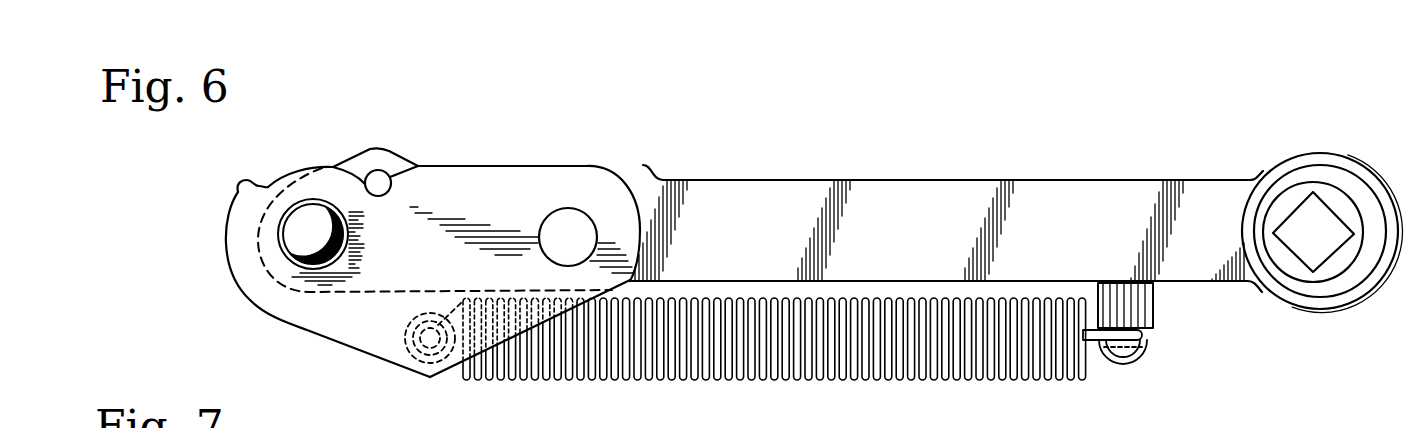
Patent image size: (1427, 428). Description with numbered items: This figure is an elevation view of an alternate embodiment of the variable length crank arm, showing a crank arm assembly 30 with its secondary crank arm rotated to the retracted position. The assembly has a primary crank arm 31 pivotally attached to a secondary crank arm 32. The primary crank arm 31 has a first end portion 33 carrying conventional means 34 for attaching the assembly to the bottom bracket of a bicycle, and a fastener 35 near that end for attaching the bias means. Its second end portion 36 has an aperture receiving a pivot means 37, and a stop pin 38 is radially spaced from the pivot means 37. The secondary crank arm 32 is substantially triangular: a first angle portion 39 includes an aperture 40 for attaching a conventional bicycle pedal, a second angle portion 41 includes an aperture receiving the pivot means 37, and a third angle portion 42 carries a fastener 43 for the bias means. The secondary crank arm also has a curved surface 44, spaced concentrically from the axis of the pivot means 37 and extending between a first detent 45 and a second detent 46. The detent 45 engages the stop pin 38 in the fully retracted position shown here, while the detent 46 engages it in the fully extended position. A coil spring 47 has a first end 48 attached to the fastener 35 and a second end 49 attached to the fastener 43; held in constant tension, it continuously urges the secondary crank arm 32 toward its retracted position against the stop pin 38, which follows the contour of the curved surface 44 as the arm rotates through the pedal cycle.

The crank arm assembly 30 is at (893, 140).
The primary crank arm 31 is at (1055, 188).
The secondary crank arm 32 is at (457, 182).
The first end portion 33 is at (1367, 175).
The conventional means 34 is at (1330, 240).
The fastener 35 is at (1144, 343).
The second end portion 36 is at (620, 165).
The pivot means 37 is at (292, 238).
The stop pin 38 is at (378, 182).
The first angle portion 39 is at (617, 207).
The aperture 40 is at (555, 216).
The second angle portion 41 is at (242, 212).
The third angle portion 42 is at (427, 377).
The fastener 43 is at (450, 368).
The curved surface 44 is at (303, 167).
The first detent 45 is at (380, 197).
The second detent 46 is at (265, 185).
The coil spring 47 is at (893, 380).
The first end 48 is at (1087, 340).
The second end 49 is at (395, 348).